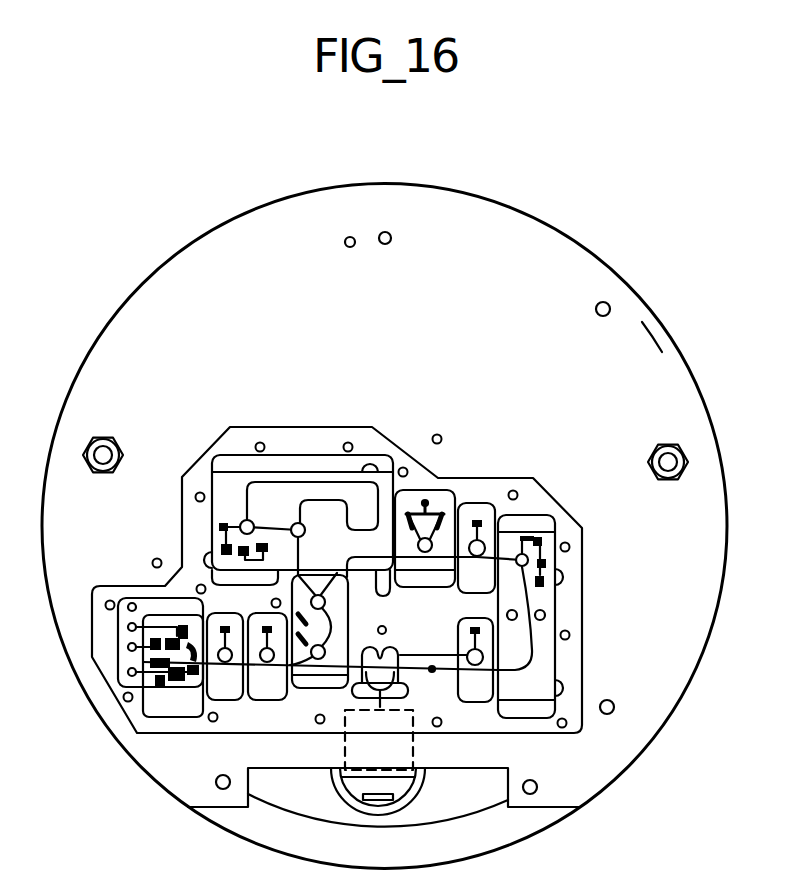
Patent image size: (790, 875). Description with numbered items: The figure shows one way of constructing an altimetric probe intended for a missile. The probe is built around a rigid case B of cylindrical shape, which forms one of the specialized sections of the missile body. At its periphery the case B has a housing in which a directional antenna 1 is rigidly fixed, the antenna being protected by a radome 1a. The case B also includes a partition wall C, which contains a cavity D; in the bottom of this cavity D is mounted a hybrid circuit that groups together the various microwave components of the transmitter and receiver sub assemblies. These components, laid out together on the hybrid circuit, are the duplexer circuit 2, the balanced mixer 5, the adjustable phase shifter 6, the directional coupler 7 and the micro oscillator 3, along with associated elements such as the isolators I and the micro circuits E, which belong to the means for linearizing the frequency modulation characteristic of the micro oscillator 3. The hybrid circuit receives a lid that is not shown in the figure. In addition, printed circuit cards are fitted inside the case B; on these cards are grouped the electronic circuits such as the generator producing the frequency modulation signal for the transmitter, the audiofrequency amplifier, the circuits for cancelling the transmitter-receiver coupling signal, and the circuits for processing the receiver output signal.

The directional antenna 1 is at (415, 798).
The radome 1a is at (498, 842).
The duplexer circuit 2 is at (388, 646).
The micro oscillator 3 is at (152, 695).
The balanced mixer 5 is at (548, 670).
The adjustable phase shifter 6 is at (433, 508).
The directional coupler 7 is at (313, 673).
The rigid case B is at (663, 288).
The partition wall C is at (660, 342).
The cavity D is at (440, 510).
The micro circuits E is at (289, 480).
The isolators I is at (267, 692).